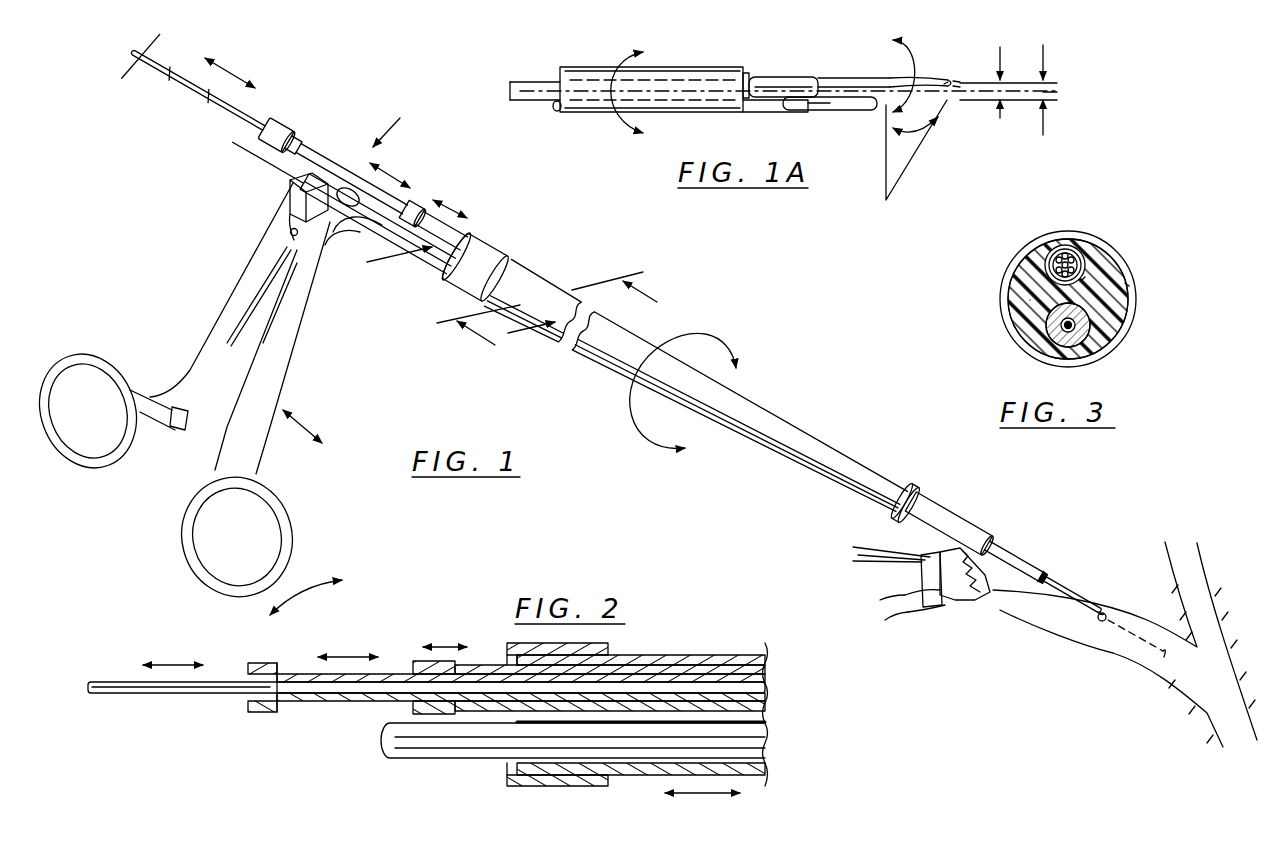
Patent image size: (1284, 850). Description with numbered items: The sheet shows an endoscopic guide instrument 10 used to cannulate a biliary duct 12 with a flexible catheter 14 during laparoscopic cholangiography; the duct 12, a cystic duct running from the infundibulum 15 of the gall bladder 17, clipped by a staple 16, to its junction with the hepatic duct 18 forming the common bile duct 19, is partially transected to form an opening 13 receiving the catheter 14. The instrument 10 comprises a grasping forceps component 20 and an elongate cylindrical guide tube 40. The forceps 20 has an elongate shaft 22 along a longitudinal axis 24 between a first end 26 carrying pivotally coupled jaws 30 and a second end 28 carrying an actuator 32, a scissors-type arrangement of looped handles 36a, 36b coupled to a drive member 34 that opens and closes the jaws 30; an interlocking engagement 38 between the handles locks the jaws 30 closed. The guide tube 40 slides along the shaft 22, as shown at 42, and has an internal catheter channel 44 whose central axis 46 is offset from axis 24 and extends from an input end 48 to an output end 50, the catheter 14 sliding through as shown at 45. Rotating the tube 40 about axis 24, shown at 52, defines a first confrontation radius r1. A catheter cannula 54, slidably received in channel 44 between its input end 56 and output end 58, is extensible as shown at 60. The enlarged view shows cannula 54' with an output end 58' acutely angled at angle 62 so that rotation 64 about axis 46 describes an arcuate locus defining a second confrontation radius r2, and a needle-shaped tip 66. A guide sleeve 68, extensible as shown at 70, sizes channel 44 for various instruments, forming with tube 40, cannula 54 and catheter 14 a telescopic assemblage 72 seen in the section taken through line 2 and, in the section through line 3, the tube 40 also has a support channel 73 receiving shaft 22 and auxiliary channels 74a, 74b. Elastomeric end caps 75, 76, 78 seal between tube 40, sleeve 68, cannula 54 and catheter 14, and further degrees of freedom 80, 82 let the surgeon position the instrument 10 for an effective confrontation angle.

In FIG. 1, the endoscopic guide instrument 10 is at (735, 276).
In FIG. 1, the biliary duct 12 is at (1110, 600).
In FIG. 1, the opening 13 is at (1107, 609).
In FIG. 1, the flexible catheter 14 is at (205, 100).
In FIG. 3, the flexible catheter 14 is at (1068, 263).
In FIG. 2, the flexible catheter 14 is at (163, 693).
In FIG. 1, the infundibulum 15 is at (925, 606).
In FIG. 1, the staple 16 is at (941, 608).
In FIG. 1, the gall bladder 17 is at (890, 605).
In FIG. 1, the hepatic duct 18 is at (1180, 560).
In FIG. 1, the common bile duct 19 is at (1230, 720).
In FIG. 1, the grasping forceps component 20 is at (228, 244).
In FIG. 1, the elongate shaft 22 is at (445, 275).
In FIG. 1A, the elongate shaft 22 is at (770, 112).
In FIG. 3, the elongate shaft 22 is at (1096, 336).
In FIG. 2, the elongate shaft 22 is at (425, 760).
In FIG. 1, the longitudinal axis 24 is at (252, 158).
In FIG. 1A, the longitudinal axis 24 is at (527, 101).
In FIG. 1, the first end 26 is at (910, 559).
In FIG. 1, the second end 28 is at (332, 247).
In FIG. 1, the jaws 30 is at (955, 597).
In FIG. 1A, the jaws 30 is at (848, 110).
In FIG. 1, the actuator 32 is at (150, 477).
In FIG. 1, the drive member 34 is at (322, 200).
In FIG. 3, the drive member 34 is at (1060, 331).
In FIG. 1, the looped handle 36a is at (222, 320).
In FIG. 1, the looped handle 36b is at (277, 347).
In FIG. 1, the interlocking engagement 38 is at (183, 430).
In FIG. 1, the guide tube 40 is at (797, 417).
In FIG. 1A, the guide tube 40 is at (695, 67).
In FIG. 3, the guide tube 40 is at (1137, 283).
In FIG. 2, the guide tube 40 is at (690, 655).
In FIG. 2, the sliding movement 42 is at (735, 795).
In FIG. 1, the catheter channel 44 is at (912, 495).
In FIG. 1A, the catheter channel 44 is at (748, 73).
In FIG. 3, the catheter channel 44 is at (1092, 263).
In FIG. 2, the catheter channel 44 is at (785, 632).
In FIG. 1, the catheter sliding movement 45 is at (235, 72).
In FIG. 2, the catheter sliding movement 45 is at (175, 664).
In FIG. 1A, the central axis 46 is at (528, 82).
In FIG. 1, the input end 48 is at (468, 238).
In FIG. 2, the input end 48 is at (507, 645).
In FIG. 1A, the output end 50 is at (775, 85).
In FIG. 1, the rotation of guide tube 52 is at (723, 345).
In FIG. 1A, the rotation of guide tube 52 is at (612, 118).
In FIG. 1, the catheter cannula 54 is at (674, 349).
In FIG. 3, the catheter cannula 54 is at (1040, 242).
In FIG. 2, the catheter cannula 54 is at (521, 706).
In FIG. 1A, the catheter cannula 54' is at (854, 63).
In FIG. 1, the input end of cannula 56 is at (293, 142).
In FIG. 2, the input end of cannula 56 is at (270, 712).
In FIG. 1, the output end of cannula 58 is at (1061, 555).
In FIG. 1A, the angled output end 58' is at (973, 70).
In FIG. 1, the cannula extension 60 is at (392, 172).
In FIG. 2, the cannula extension 60 is at (345, 656).
In FIG. 1A, the angle 62 is at (905, 138).
In FIG. 1A, the cannula rotation 64 is at (910, 58).
In FIG. 1A, the tip 66 is at (948, 96).
In FIG. 1, the guide sleeve 68 is at (436, 246).
In FIG. 1A, the guide sleeve 68 is at (750, 78).
In FIG. 3, the guide sleeve 68 is at (1044, 257).
In FIG. 2, the guide sleeve 68 is at (458, 665).
In FIG. 1, the sleeve extension 70 is at (458, 205).
In FIG. 2, the sleeve extension 70 is at (440, 646).
In FIG. 1, the telescopic assemblage 72 is at (400, 126).
In FIG. 3, the internal support channel 73 is at (1040, 330).
In FIG. 3, the auxiliary channel 74a is at (1122, 318).
In FIG. 3, the auxiliary channel 74b is at (1035, 288).
In FIG. 1, the end cap 75 is at (505, 253).
In FIG. 3, the end cap 75 is at (1130, 280).
In FIG. 2, the end cap 75 is at (510, 786).
In FIG. 1, the end cap 76 is at (420, 210).
In FIG. 2, the end cap 76 is at (420, 661).
In FIG. 1, the end cap 78 is at (279, 125).
In FIG. 2, the end cap 78 is at (262, 663).
In FIG. 1, the additional degree of freedom 80 is at (303, 425).
In FIG. 1, the additional degree of freedom 82 is at (308, 597).
In FIG. 1, the section line 2- 2 is at (461, 303).
In FIG. 1, the section line 3- 3 is at (553, 321).
In FIG. 1A, the first confrontation radius r1 is at (1045, 92).
In FIG. 1A, the second confrontation radius r2 is at (1000, 50).